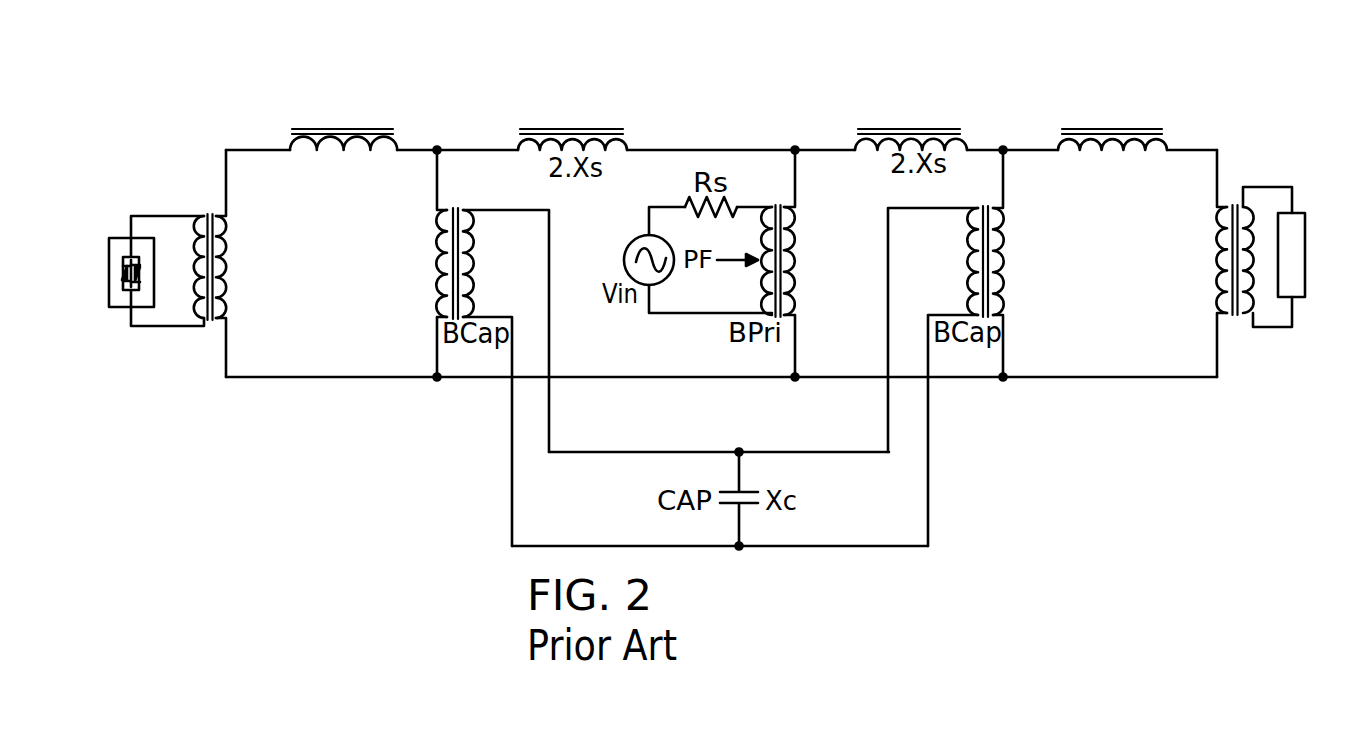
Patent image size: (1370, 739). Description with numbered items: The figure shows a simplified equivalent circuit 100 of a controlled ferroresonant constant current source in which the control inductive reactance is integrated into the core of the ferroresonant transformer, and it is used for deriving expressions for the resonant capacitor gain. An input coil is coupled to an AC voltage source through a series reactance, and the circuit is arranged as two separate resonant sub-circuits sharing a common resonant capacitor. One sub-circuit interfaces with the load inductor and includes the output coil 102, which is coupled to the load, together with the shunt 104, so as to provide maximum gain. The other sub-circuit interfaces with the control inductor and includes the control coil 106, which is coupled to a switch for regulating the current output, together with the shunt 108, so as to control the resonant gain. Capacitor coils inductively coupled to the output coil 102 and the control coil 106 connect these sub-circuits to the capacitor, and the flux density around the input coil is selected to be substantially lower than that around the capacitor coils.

The equivalent circuit 100 is at (937, 81).
The output coil 102 is at (1225, 160).
The shunt 104 is at (1092, 123).
The control coil 106 is at (208, 188).
The shunt 108 is at (332, 127).